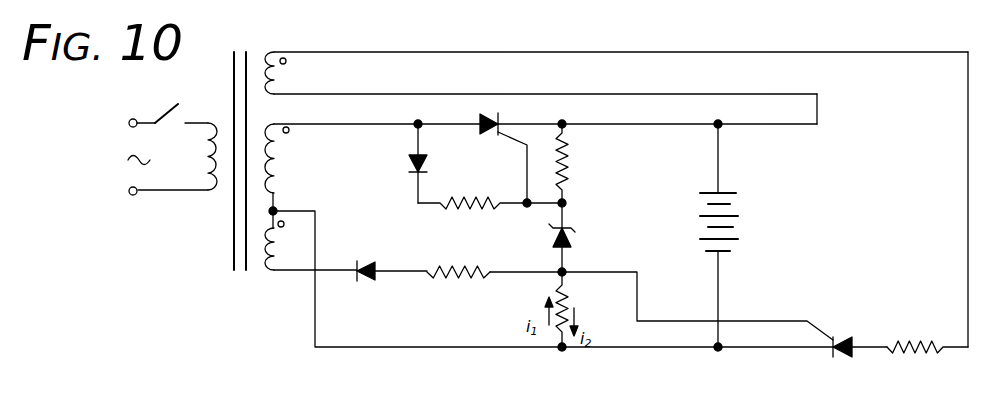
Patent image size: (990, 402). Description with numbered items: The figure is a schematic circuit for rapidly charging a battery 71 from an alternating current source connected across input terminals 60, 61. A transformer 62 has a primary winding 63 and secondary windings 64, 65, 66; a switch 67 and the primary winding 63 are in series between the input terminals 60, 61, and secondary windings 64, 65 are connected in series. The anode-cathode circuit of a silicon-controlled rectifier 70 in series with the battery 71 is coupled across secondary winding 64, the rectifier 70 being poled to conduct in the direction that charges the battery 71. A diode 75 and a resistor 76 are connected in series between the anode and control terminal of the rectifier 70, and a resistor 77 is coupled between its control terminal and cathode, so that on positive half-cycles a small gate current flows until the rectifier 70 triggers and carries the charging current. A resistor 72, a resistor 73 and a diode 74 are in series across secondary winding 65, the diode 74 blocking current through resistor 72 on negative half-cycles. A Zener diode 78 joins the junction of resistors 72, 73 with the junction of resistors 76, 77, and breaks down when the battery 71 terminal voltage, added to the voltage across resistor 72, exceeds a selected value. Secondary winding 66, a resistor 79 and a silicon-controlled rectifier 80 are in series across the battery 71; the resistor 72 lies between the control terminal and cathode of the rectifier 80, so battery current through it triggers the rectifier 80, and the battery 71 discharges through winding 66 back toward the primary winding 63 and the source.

The input terminal 60 is at (138, 120).
The input terminal 61 is at (137, 197).
The transformer 62 is at (224, 124).
The primary winding 63 is at (209, 167).
The secondary winding 64 is at (275, 174).
The secondary winding 65 is at (274, 248).
The secondary winding 66 is at (276, 82).
The switch 67 is at (177, 87).
The silicon-controlled rectifier 70 is at (478, 132).
The battery 71 is at (730, 191).
The resistor 72 is at (571, 300).
The resistor 73 is at (479, 274).
The diode 74 is at (357, 262).
The diode 75 is at (409, 162).
The resistor 76 is at (497, 205).
The resistor 77 is at (568, 170).
The Zener diode 78 is at (567, 228).
The resistor 79 is at (920, 345).
The silicon-controlled rectifier 80 is at (838, 338).